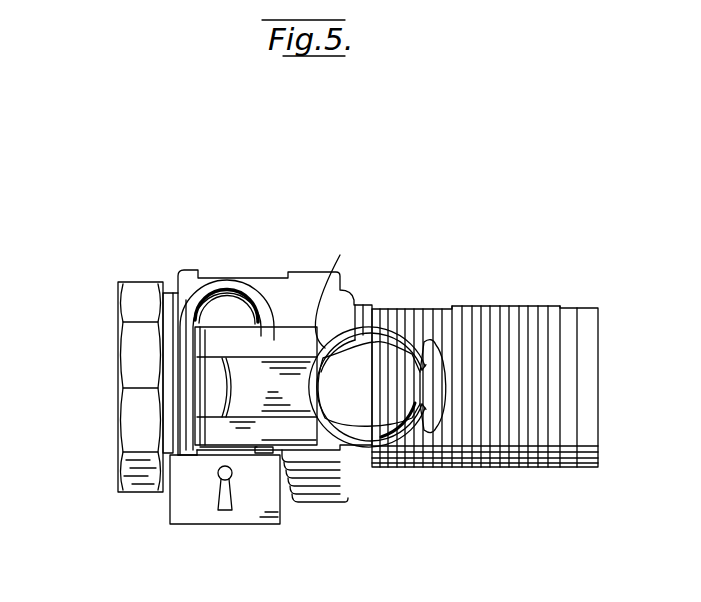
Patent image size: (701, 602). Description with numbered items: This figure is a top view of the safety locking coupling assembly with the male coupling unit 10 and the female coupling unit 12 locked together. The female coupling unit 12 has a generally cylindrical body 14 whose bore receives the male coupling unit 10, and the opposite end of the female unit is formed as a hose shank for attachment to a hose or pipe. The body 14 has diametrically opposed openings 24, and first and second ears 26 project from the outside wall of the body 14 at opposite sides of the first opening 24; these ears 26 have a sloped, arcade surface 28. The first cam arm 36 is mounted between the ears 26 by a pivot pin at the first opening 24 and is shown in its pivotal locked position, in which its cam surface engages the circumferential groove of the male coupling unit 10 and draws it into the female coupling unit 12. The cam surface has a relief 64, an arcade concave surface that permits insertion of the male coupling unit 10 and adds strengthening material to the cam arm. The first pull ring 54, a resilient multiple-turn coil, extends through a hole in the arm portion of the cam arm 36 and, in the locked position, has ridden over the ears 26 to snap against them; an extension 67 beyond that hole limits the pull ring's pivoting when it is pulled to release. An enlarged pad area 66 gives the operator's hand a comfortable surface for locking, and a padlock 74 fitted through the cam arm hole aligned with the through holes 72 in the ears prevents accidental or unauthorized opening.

The male coupling unit 10 is at (118, 251).
The female coupling unit 12 is at (497, 511).
The body 14 is at (267, 288).
The openings 24 is at (210, 400).
The first and second ears 26 is at (222, 342).
The sloped arcade surface 28 is at (340, 255).
The first cam arm 36 is at (268, 378).
The first pull ring 54 is at (377, 335).
The relief 64 is at (222, 380).
The enlarged pad area 66 is at (390, 373).
The extension 67 is at (428, 352).
The through holes 72 is at (228, 292).
The padlock 74 is at (202, 508).